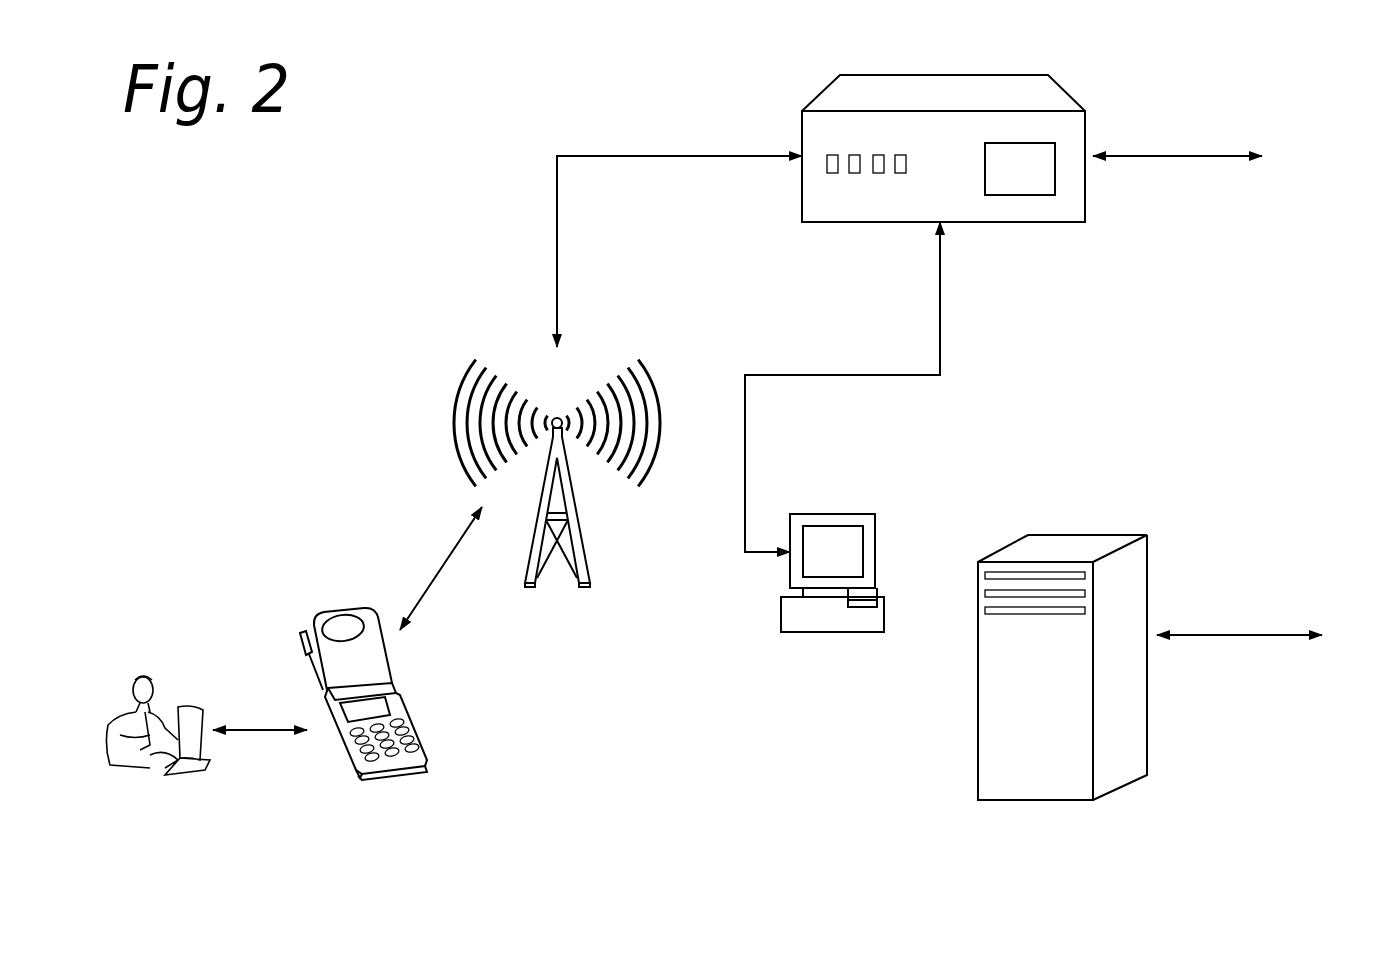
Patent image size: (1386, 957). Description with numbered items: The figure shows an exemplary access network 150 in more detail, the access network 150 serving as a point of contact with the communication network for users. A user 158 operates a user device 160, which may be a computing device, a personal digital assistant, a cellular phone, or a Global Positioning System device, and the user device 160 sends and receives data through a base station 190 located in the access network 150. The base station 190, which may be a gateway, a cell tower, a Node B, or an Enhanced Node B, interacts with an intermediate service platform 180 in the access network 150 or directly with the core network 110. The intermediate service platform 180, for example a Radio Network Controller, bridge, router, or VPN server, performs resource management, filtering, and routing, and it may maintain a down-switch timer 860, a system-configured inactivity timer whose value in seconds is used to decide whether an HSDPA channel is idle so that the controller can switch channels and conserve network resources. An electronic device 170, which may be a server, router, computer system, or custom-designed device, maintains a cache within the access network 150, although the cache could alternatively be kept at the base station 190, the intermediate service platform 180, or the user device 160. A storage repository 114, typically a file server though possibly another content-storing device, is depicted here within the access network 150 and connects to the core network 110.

The access network 150 is at (873, 911).
The intermediate service platform 180 is at (865, 93).
The down-switch timer 860 is at (1020, 169).
The core network 110 is at (1235, 397).
The base station 190 is at (487, 352).
The electronic device 170 is at (852, 507).
The storage repository 114 is at (1147, 717).
The user device 160 is at (370, 772).
The user 158 is at (152, 780).